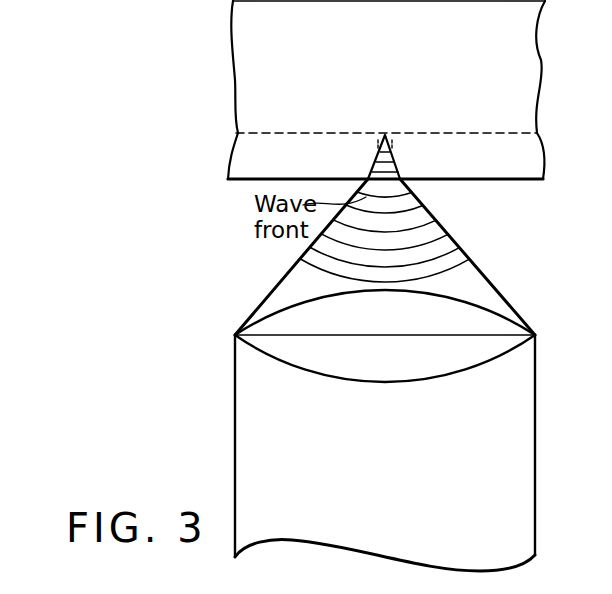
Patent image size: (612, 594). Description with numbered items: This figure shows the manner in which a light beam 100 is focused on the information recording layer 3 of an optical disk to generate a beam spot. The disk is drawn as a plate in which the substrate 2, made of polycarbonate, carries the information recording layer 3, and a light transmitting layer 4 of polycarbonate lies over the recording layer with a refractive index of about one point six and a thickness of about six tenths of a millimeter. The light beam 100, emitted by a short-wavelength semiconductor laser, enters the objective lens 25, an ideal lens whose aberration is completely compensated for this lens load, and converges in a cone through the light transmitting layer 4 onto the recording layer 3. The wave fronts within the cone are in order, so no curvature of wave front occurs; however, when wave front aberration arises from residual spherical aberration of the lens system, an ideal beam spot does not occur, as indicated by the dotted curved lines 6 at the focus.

The substrate 2 is at (312, 70).
The information recording layer 3 is at (250, 133).
The light transmitting layer 4 is at (312, 167).
The dotted curved lines 6 is at (400, 141).
The objective lens 25 is at (268, 360).
The light beam 100 is at (256, 436).